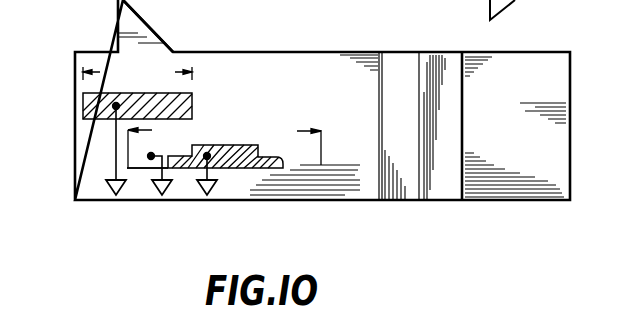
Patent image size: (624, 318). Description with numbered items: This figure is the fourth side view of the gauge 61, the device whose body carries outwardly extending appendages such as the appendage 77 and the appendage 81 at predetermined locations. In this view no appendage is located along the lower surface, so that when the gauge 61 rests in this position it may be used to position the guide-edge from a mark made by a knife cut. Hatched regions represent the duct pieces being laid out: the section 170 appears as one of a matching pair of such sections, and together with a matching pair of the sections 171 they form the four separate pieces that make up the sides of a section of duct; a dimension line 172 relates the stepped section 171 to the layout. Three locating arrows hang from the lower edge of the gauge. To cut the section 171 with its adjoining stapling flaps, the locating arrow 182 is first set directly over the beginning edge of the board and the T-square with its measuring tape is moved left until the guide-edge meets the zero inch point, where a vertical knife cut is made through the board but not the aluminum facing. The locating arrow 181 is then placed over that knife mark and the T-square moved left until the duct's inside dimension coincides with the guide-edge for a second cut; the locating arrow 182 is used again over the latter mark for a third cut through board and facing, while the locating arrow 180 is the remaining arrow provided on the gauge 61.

The gauge 61 is at (572, 136).
The appendage 77 is at (432, 63).
The appendage 81 is at (143, 37).
The section 170 is at (83, 105).
The section 171 is at (272, 160).
The reference line 172 is at (137, 170).
The locating arrow 180 is at (107, 195).
The locating arrow 181 is at (218, 203).
The locating arrow 182 is at (166, 196).